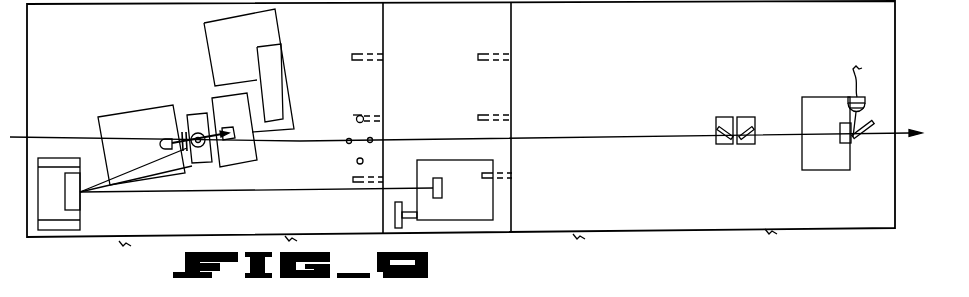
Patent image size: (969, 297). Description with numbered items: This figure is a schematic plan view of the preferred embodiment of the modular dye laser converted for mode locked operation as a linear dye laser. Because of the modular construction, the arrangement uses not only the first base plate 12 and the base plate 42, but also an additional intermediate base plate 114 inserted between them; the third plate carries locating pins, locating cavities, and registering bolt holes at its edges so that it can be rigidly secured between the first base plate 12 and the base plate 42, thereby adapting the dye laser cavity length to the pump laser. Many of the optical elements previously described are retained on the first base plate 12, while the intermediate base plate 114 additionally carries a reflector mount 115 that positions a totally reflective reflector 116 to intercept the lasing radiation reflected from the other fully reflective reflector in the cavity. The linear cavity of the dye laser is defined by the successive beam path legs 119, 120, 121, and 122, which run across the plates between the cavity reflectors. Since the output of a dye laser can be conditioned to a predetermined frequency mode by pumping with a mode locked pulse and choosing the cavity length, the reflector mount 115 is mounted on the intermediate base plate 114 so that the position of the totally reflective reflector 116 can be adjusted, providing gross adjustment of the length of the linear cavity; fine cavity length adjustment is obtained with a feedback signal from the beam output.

The first base plate 12 is at (330, 37).
The intermediate base plate 114 is at (443, 37).
The base plate 42 is at (573, 37).
The beam path leg 122 is at (553, 137).
The beam path leg 121 is at (181, 131).
The beam path leg 120 is at (175, 172).
The beam path leg 119 is at (291, 190).
The totally reflective reflector 116 is at (442, 192).
The reflector mount 115 is at (492, 191).